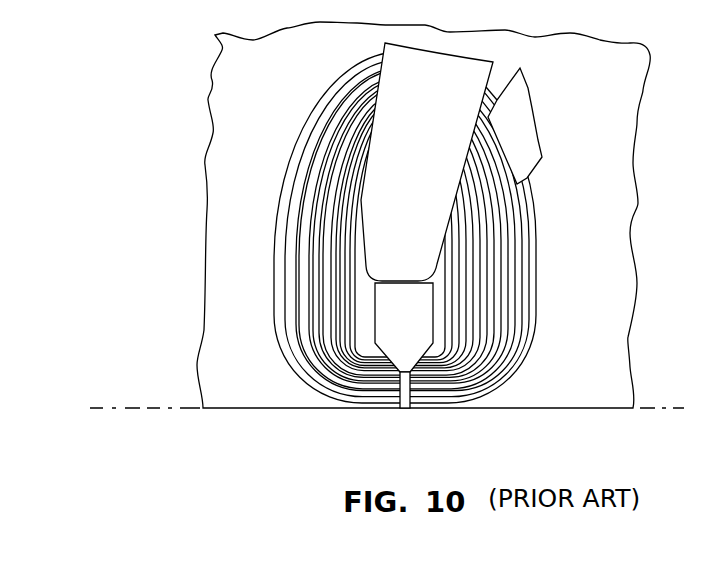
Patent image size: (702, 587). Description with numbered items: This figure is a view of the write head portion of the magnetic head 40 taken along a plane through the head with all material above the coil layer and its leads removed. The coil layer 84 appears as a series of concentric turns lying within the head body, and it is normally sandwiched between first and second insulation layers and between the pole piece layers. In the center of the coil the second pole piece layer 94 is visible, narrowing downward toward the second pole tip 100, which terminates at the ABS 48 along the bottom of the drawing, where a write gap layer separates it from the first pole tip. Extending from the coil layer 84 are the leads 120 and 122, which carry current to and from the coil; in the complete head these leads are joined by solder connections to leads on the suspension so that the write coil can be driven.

The magnetic head 40 is at (556, 207).
The ABS 48 is at (146, 408).
The coil layer 84 is at (510, 305).
The second pole piece layer 94 is at (417, 333).
The second pole tip 100 is at (405, 410).
The lead 120 is at (433, 158).
The lead 122 is at (530, 117).